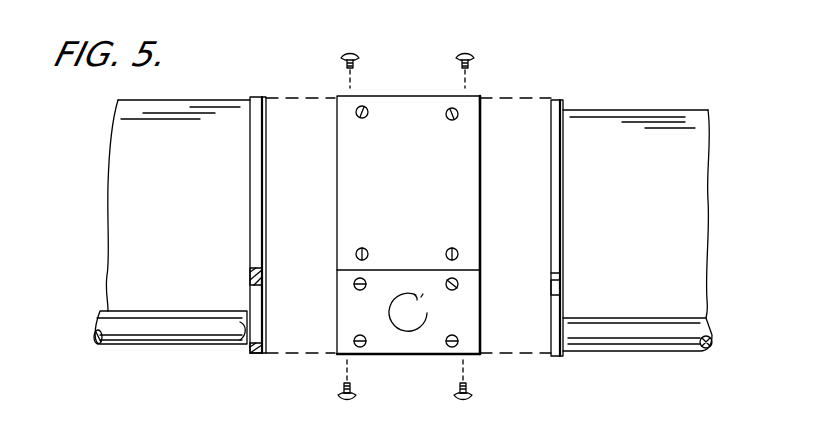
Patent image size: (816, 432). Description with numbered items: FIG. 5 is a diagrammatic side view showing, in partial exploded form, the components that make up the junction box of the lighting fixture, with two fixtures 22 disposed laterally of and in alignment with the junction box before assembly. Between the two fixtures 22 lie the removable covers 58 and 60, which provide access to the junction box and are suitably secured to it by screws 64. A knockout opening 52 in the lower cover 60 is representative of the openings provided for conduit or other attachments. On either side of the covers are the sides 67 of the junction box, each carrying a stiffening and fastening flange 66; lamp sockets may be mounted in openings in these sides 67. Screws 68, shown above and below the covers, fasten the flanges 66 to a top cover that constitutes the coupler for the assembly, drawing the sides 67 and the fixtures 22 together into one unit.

The panel 22 is at (637, 110).
The knockout opening 52 is at (408, 328).
The cover 58 is at (481, 191).
The cover 60 is at (481, 305).
The screw 64 is at (366, 107).
The stiffening and fastening flange 66 is at (262, 96).
The side 67 is at (251, 299).
The screw 68 is at (356, 52).